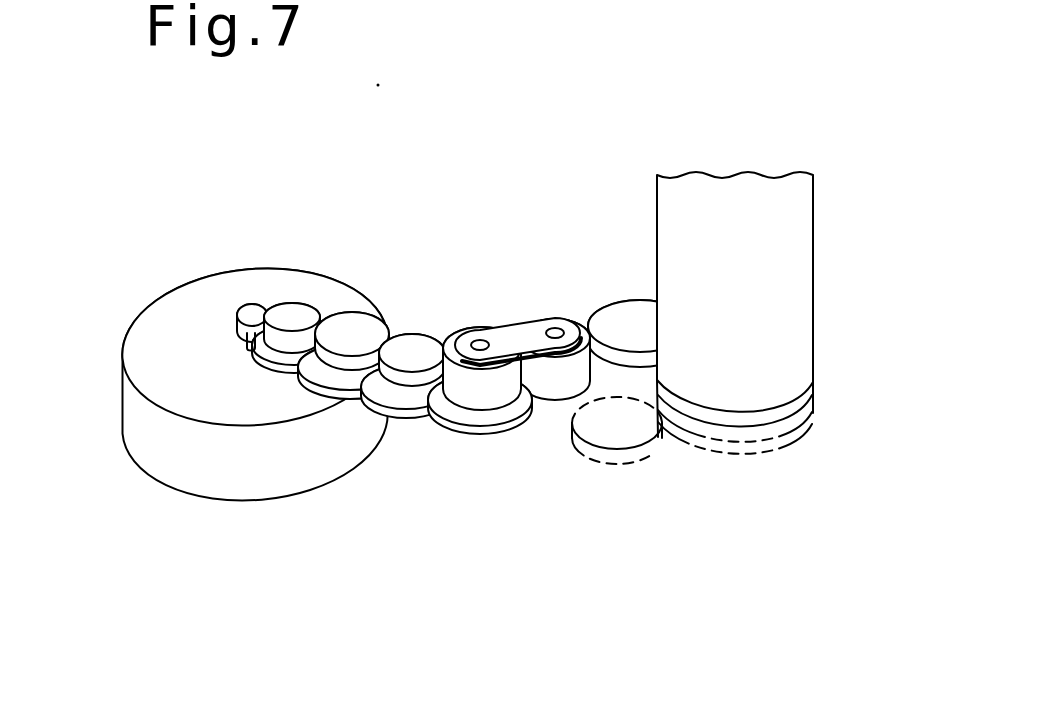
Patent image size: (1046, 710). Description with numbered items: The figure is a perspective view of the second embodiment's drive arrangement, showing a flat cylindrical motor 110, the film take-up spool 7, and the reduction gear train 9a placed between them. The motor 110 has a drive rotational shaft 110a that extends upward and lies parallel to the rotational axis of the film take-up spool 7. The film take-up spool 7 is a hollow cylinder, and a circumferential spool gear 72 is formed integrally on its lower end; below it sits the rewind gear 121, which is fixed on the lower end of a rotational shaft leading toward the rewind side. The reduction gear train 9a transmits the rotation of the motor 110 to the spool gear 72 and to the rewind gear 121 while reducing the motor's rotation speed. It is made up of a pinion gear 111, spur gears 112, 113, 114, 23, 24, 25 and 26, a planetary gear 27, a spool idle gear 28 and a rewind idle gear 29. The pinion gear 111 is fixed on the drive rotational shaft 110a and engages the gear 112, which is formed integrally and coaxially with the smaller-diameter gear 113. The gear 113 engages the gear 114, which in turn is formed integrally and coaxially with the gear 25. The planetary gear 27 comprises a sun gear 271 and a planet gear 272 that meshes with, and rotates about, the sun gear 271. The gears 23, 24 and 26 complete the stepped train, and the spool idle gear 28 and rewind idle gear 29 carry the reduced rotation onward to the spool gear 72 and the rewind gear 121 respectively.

The flat cylindrical motor 110 is at (150, 320).
The drive rotational shaft 110a is at (248, 345).
The pinion gear 111 is at (247, 332).
The spur gear 112 is at (277, 365).
The spur gear 113 is at (287, 342).
The spur gear 114 is at (330, 392).
The spur gear 23 is at (346, 357).
The spur gear 24 is at (413, 412).
The spur gear 25 is at (407, 380).
The spur gear 26 is at (496, 430).
The planetary gear 27 is at (514, 300).
The sun gear 271 is at (477, 397).
The planet gear 272 is at (560, 390).
The spool idle gear 28 is at (636, 356).
The rewind idle gear 29 is at (628, 466).
The reduction gear train 9a is at (557, 210).
The film take-up spool 7 is at (822, 289).
The spool gear 72 is at (806, 401).
The rewind gear 121 is at (793, 437).